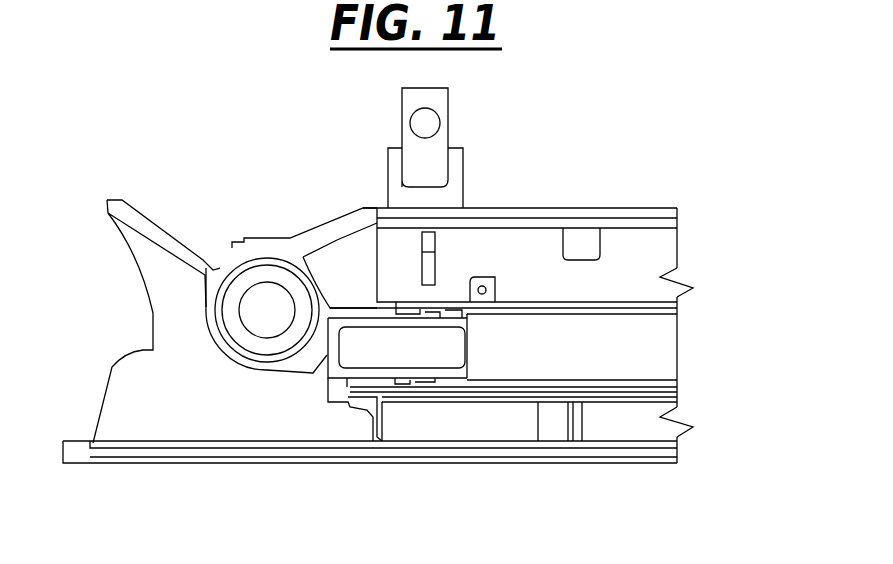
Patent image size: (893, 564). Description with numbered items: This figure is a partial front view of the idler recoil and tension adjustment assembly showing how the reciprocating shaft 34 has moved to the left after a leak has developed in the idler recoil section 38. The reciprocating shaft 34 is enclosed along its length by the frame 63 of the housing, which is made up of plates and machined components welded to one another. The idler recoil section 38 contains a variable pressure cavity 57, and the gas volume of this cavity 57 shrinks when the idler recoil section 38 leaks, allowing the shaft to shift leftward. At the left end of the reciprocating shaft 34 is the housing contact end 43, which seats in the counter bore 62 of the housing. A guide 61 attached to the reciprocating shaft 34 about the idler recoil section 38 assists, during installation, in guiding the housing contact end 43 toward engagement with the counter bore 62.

The reciprocating shaft 34 is at (610, 345).
The idler recoil section 38 is at (538, 407).
The housing contact end 43 is at (328, 340).
The variable pressure cavity 57 is at (428, 340).
The guide 61 is at (485, 280).
The counter bore 62 is at (327, 355).
The frame 63 is at (520, 227).